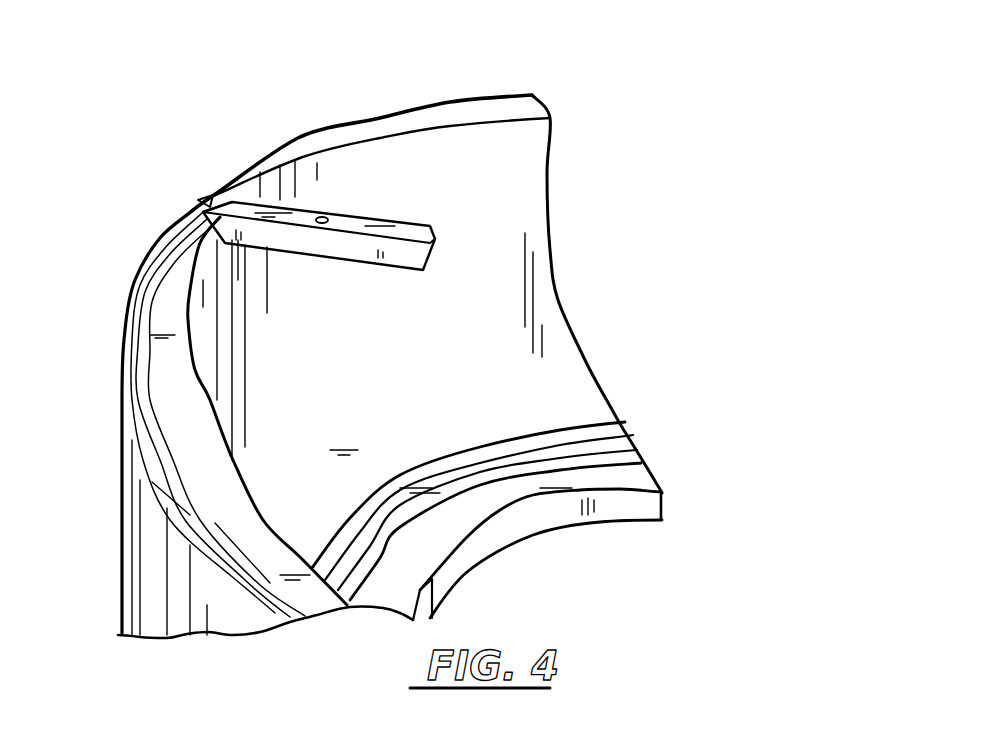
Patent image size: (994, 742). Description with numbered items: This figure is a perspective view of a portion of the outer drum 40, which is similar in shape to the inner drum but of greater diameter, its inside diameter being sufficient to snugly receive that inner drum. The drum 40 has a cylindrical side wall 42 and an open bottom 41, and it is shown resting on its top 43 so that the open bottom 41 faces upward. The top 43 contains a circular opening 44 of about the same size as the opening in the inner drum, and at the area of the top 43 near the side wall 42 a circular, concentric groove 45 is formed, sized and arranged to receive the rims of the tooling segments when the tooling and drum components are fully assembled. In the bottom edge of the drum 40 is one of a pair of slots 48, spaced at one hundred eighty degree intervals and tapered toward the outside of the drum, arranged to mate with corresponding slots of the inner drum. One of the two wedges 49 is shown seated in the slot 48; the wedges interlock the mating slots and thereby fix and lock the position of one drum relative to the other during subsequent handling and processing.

The outer drum 40 is at (162, 212).
The open bottom 41 is at (493, 108).
The cylindrical side wall 42 is at (535, 298).
The top 43 is at (465, 570).
The circular opening 44 is at (563, 518).
The channel top surface 45 is at (631, 440).
The slot 48 is at (227, 206).
The wedge 49 is at (406, 227).